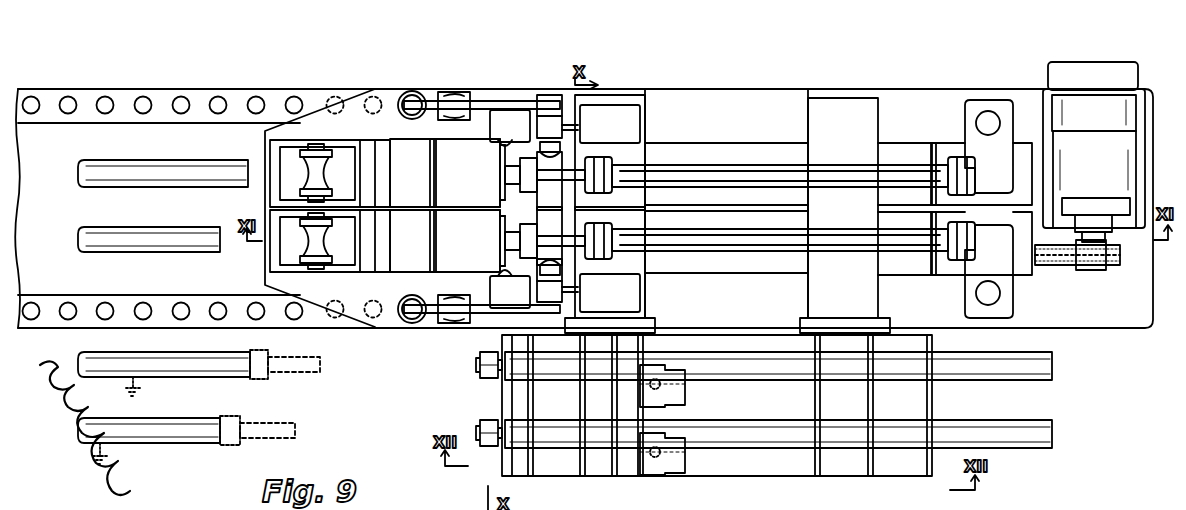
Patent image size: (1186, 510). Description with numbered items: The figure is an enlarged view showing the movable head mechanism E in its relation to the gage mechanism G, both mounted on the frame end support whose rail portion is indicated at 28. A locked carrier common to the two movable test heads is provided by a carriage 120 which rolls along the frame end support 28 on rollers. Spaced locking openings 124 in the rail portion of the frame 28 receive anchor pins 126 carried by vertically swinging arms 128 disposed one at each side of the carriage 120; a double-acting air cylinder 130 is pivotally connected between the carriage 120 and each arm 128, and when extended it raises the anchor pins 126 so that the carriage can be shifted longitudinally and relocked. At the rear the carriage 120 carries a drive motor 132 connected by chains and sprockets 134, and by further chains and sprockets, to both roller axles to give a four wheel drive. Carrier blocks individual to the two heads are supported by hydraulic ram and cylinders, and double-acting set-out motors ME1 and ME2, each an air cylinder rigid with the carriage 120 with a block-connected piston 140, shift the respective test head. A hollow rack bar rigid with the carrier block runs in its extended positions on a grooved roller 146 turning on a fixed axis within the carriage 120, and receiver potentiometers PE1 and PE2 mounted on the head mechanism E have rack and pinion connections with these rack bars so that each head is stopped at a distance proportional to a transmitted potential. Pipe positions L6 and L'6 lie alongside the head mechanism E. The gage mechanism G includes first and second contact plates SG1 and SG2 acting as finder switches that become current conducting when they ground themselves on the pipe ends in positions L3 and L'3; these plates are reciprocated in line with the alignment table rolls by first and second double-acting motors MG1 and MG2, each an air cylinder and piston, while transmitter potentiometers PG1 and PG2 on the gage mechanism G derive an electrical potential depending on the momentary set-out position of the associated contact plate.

The movable head mechanism E is at (748, 88).
The gage mechanism G is at (779, 478).
The carriage 120 is at (308, 104).
The locking openings 124 is at (300, 320).
The anchor pins 126 is at (411, 90).
The vertically swinging arms 128 is at (520, 100).
The double-acting air cylinder 130 is at (451, 92).
The drive motor 132 is at (1118, 237).
The chains and sprockets 134 is at (1074, 262).
The block-connected piston 140 is at (925, 165).
The grooved roller 146 is at (298, 197).
The rail portion of the frame end support 28 is at (250, 300).
The potentiometer PE1 is at (500, 108).
The potentiometer PE2 is at (500, 314).
The double-acting set-out motor ME1 is at (705, 160).
The double-acting set-out motor ME2 is at (707, 260).
The pipe position L6 is at (162, 160).
The pipe position L'6 is at (149, 226).
The pipe position L3 is at (170, 378).
The pipe position L'3 is at (186, 444).
The first contact plate SG1 is at (486, 379).
The second contact plate SG2 is at (486, 447).
The potentiometer PG1 is at (684, 385).
The potentiometer PG2 is at (684, 455).
The first double-acting motor MG1 is at (760, 380).
The second double-acting motor MG2 is at (755, 448).